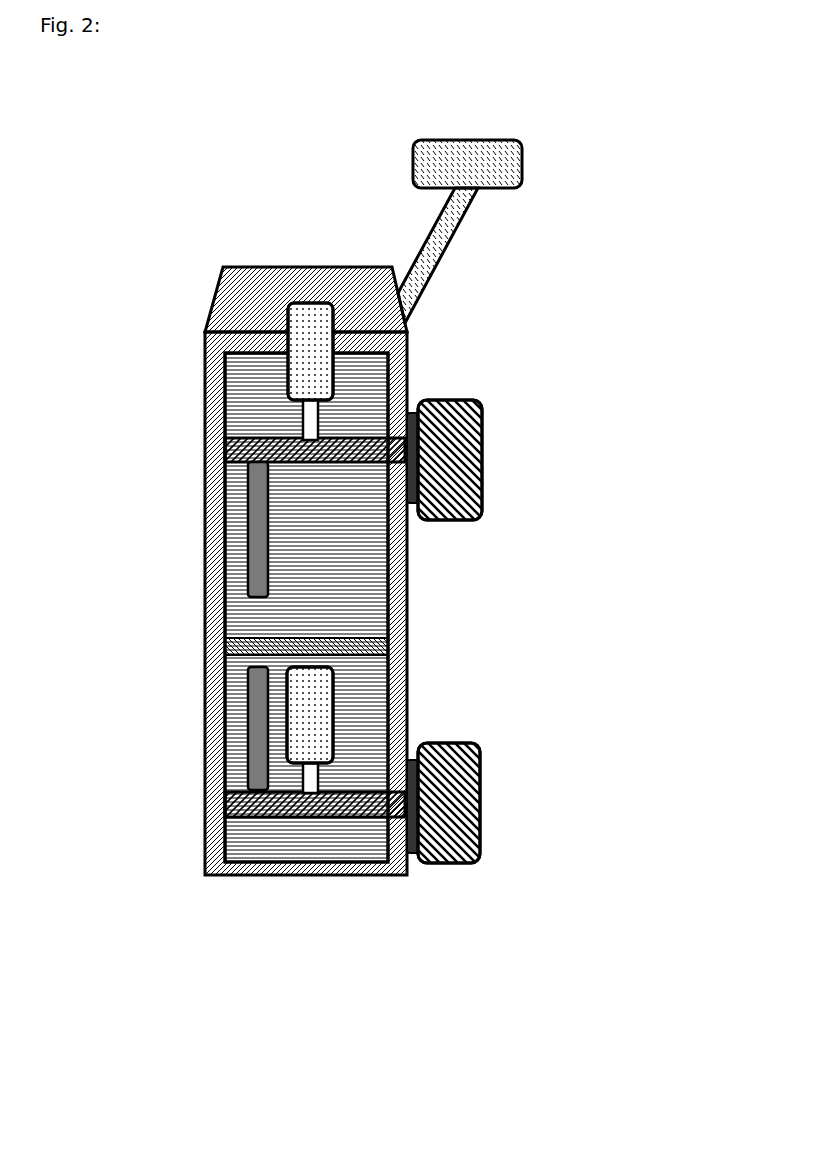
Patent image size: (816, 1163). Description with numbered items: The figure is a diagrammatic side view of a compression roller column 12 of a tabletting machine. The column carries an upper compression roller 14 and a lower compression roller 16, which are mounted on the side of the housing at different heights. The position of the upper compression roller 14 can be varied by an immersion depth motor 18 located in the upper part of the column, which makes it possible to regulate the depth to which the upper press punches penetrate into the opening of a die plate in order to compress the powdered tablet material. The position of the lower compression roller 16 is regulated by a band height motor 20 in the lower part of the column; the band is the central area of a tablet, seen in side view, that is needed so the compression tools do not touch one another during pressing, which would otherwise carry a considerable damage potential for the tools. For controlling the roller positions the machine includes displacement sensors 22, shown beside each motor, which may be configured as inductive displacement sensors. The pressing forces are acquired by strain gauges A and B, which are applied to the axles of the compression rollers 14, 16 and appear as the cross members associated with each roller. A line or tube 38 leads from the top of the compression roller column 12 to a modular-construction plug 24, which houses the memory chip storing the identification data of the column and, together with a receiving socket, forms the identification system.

The compression roller column 12 is at (192, 843).
The upper compression roller 14 is at (458, 477).
The lower compression roller 16 is at (455, 827).
The immersion depth motor 18 is at (315, 364).
The band height motor 20 is at (315, 720).
The displacement sensor 22 is at (237, 543).
The modular-construction plug 24 is at (470, 163).
The line or tube for compression roller column 38 is at (432, 257).
The upper compression roller axle with applied strain gauges A is at (257, 450).
The lower compression roller axle with applied strain gauges B is at (325, 805).